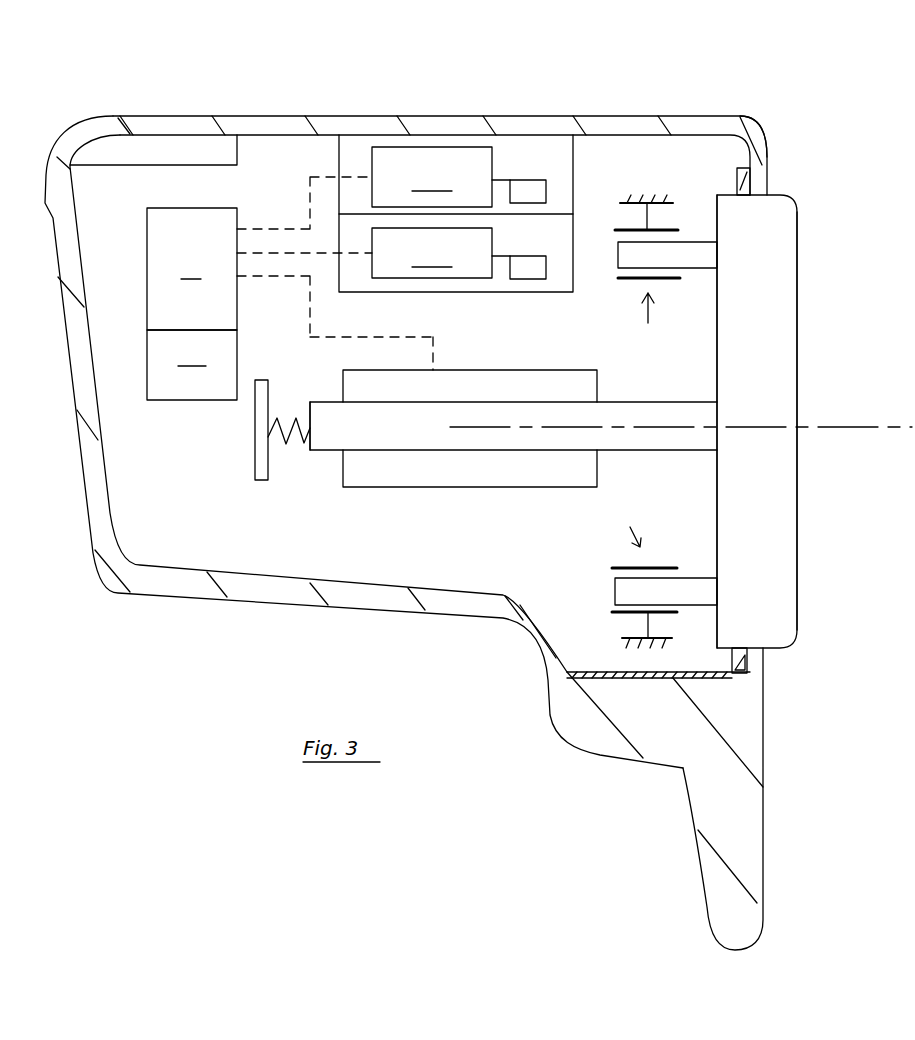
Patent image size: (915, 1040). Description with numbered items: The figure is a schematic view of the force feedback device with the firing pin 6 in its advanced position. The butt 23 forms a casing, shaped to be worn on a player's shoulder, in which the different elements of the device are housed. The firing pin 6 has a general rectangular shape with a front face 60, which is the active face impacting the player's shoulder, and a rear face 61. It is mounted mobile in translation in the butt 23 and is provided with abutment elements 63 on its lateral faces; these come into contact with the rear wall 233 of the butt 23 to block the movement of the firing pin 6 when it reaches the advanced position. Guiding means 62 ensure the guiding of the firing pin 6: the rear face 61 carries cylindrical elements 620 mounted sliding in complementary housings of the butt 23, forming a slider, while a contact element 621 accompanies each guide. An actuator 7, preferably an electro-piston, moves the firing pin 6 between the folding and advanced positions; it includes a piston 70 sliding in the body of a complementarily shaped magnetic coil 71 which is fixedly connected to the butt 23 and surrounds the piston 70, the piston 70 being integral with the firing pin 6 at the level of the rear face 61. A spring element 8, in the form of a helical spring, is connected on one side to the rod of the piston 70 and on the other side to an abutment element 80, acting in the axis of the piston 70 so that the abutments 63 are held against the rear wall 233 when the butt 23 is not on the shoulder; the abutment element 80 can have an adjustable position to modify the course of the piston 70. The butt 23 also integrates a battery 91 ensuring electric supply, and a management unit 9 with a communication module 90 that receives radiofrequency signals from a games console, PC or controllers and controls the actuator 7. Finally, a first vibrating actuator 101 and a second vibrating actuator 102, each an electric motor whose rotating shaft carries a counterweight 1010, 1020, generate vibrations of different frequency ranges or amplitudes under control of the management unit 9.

The butt 23 is at (513, 115).
The rear wall 233 is at (745, 140).
The battery 91 is at (173, 152).
The management unit 9 is at (290, 273).
The communication module 90 is at (192, 365).
The first vibrating actuator 101 is at (456, 213).
The second vibrating actuator 102 is at (432, 253).
The counterweight 1010 is at (522, 193).
The counterweight 1020 is at (522, 270).
The firing pin 6 is at (777, 308).
The front face 60 is at (793, 512).
The rear face 61 is at (717, 505).
The guiding means 62 is at (640, 420).
The cylindrical element 620 is at (617, 263).
The ground plate 621 is at (670, 230).
The abutment element 63 is at (748, 186).
The actuator 7 is at (418, 499).
The piston 70 is at (325, 455).
The magnetic coil 71 is at (475, 477).
The spring element 8 is at (293, 404).
The abutment element 80 is at (253, 463).